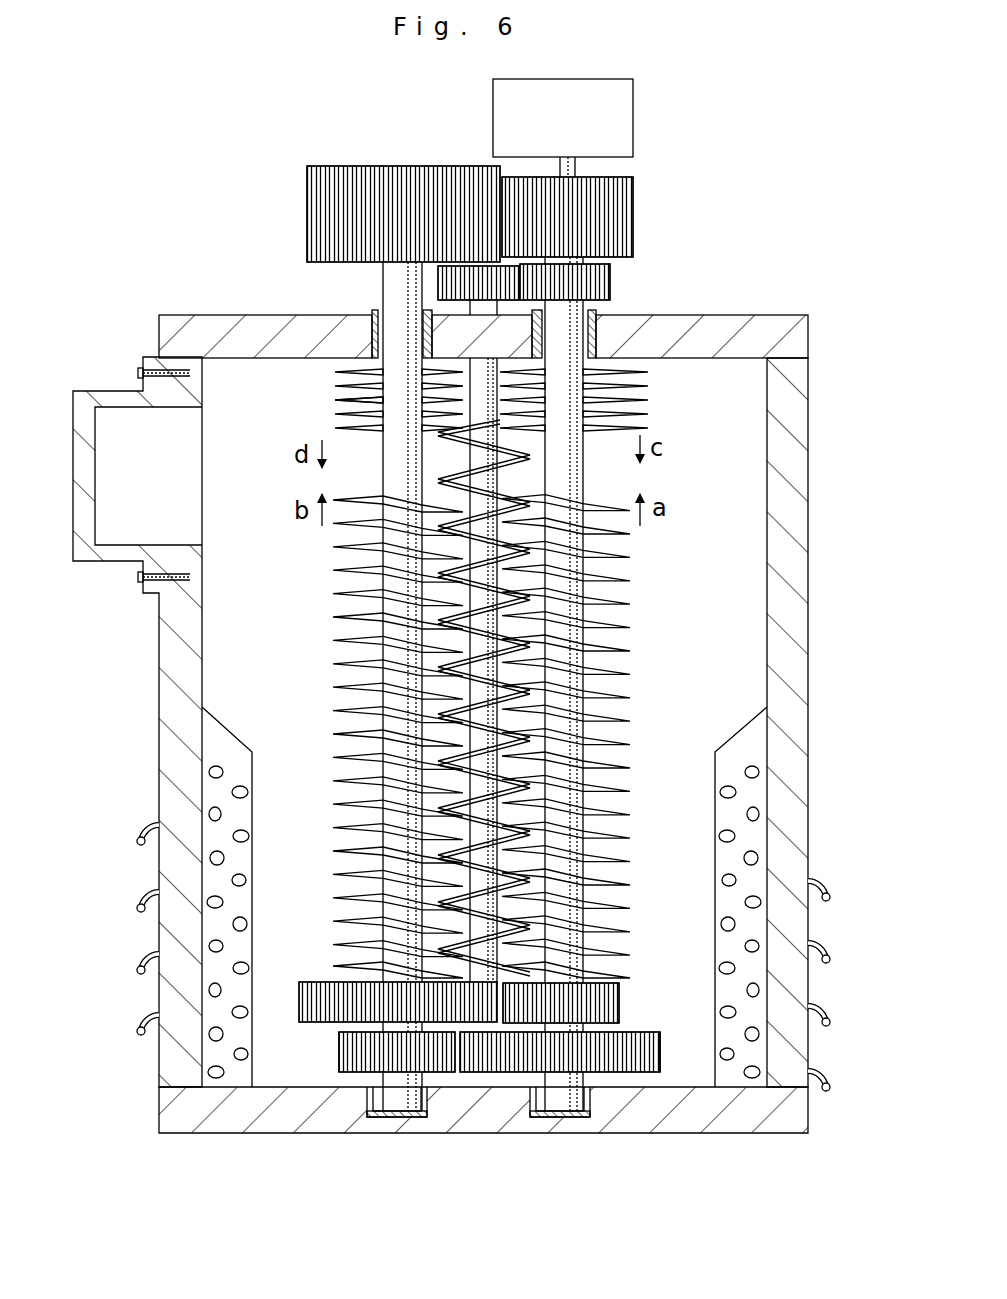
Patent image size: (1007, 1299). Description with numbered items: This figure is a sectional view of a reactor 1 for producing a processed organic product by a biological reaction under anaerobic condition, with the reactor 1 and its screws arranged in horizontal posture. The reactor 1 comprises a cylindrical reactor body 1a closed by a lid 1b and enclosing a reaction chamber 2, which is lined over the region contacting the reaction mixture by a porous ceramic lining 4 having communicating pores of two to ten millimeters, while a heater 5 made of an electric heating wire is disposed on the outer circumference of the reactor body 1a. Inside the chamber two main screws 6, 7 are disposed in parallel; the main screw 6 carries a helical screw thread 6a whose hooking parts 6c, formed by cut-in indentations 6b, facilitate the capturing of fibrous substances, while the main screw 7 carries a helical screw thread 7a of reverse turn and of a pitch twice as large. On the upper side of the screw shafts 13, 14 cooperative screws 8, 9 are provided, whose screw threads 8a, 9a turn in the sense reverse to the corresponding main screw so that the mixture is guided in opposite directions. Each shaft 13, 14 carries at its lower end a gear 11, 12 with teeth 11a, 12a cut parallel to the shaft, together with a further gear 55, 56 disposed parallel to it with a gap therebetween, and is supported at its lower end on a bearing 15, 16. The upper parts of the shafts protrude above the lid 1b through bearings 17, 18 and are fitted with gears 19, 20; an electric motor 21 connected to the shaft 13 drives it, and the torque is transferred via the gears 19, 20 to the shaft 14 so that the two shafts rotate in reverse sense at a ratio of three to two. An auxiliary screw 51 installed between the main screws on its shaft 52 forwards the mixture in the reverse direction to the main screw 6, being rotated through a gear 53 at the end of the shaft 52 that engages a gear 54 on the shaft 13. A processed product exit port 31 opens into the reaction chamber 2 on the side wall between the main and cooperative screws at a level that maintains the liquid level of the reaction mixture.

The reactor 1 is at (465, 671).
The reactor body 1a is at (172, 634).
The lid 1b is at (778, 325).
The reaction chamber 2 is at (723, 630).
The porous lining 4 is at (715, 830).
The heater 5 is at (145, 966).
The main screw 6 is at (604, 644).
The helical screw thread 6a is at (625, 645).
The cut-in indentations 6b is at (602, 557).
The hooking parts 6c is at (622, 797).
The main screw 7 is at (360, 686).
The helical screw thread 7a is at (338, 638).
The cooperative screw 8 is at (580, 641).
The screw thread 8a is at (614, 379).
The cooperative screw 9 is at (383, 376).
The screw thread 9a is at (338, 396).
The gear 11 is at (630, 1040).
The teeth 11a is at (660, 1062).
The gear 12 is at (340, 1028).
The teeth 12a is at (300, 1006).
The screw shaft 13 is at (622, 708).
The screw shaft 14 is at (338, 690).
The bearing 15 is at (585, 1130).
The bearing 16 is at (428, 1128).
The bearing 17 is at (600, 312).
The bearing 18 is at (372, 314).
The gear 19 is at (633, 213).
The gear 20 is at (307, 207).
The electric motor 21 is at (633, 118).
The processed product exit port 31 is at (108, 424).
The auxiliary screw 51 is at (530, 665).
The shaft 52 is at (485, 862).
The gear 53 is at (443, 282).
The gear 54 is at (612, 282).
The gear 55 is at (620, 1000).
The gear 56 is at (338, 1053).